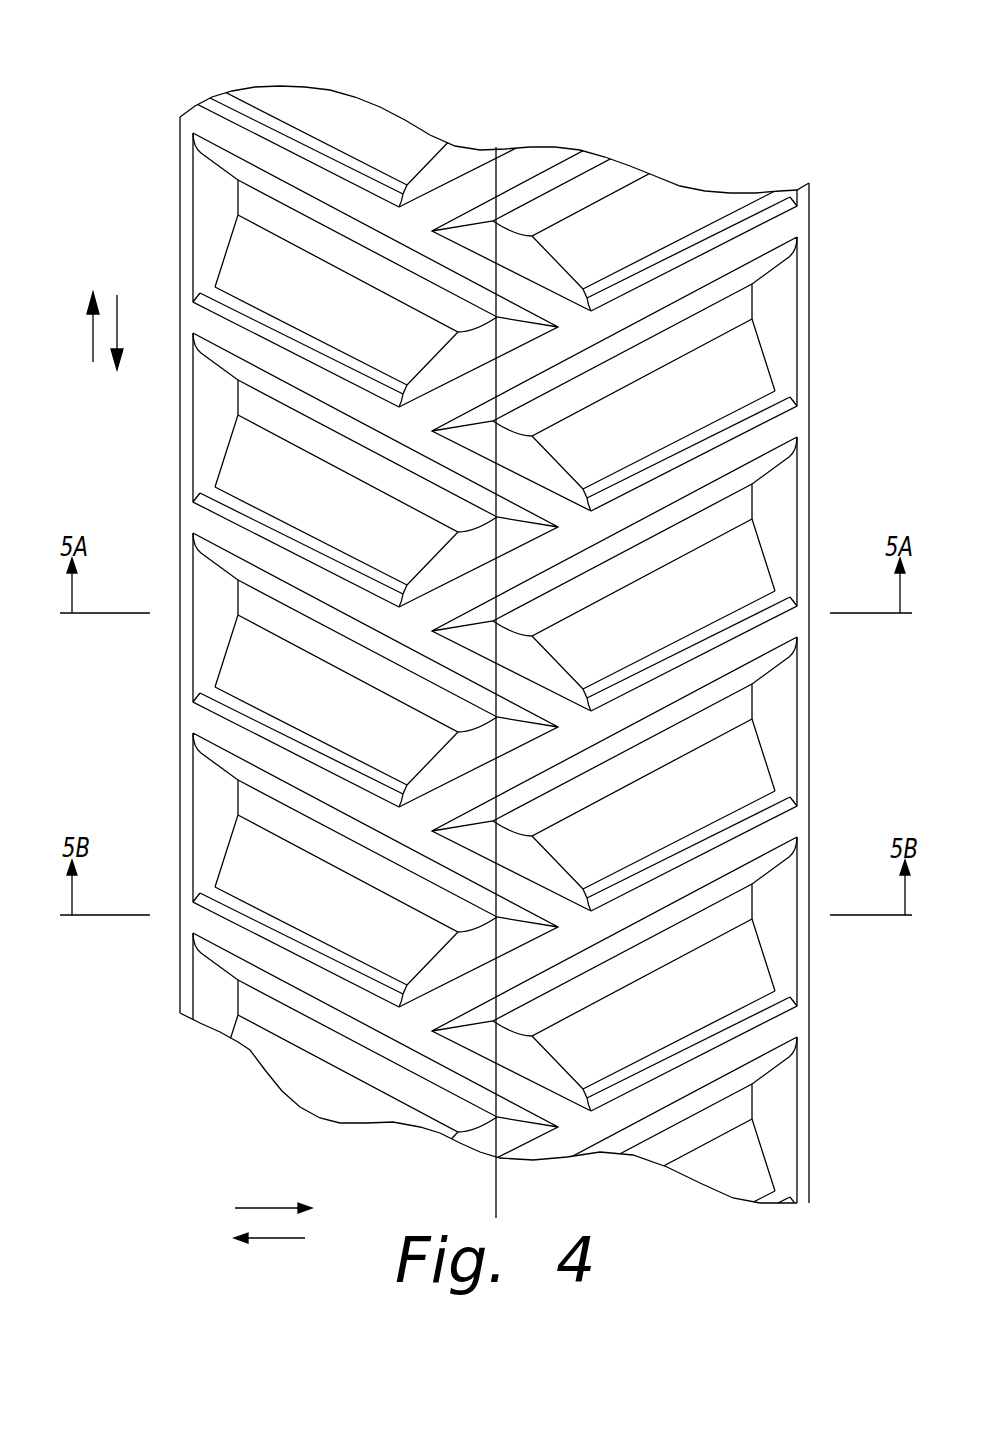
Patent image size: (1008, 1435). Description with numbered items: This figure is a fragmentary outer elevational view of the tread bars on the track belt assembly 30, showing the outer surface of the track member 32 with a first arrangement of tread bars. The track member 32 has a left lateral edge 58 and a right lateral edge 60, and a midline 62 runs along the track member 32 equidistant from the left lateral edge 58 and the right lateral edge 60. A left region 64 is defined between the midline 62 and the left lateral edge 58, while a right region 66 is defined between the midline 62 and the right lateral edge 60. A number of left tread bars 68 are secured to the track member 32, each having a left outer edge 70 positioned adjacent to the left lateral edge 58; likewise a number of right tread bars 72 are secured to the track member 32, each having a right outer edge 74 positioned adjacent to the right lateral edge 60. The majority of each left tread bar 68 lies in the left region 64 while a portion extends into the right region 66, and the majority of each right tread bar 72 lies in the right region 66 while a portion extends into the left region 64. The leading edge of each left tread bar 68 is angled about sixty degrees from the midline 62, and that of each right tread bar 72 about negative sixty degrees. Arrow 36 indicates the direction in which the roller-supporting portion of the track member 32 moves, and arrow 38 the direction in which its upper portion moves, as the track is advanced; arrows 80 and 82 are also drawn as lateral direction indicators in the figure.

The track belt assembly 30 is at (148, 96).
The track member 32 is at (811, 205).
The arrow 36 is at (93, 330).
The arrow 38 is at (117, 333).
The left lateral edge 58 is at (172, 728).
The right lateral edge 60 is at (822, 822).
The midline 62 is at (498, 147).
The left region 64 is at (313, 105).
The right region 66 is at (614, 136).
The left tread bars 68 is at (343, 603).
The left outer edge 70 is at (183, 610).
The right tread bars 72 is at (647, 674).
The right outer edge 74 is at (807, 714).
The lateral direction 80 is at (262, 1208).
The opposite lateral direction 82 is at (262, 1238).